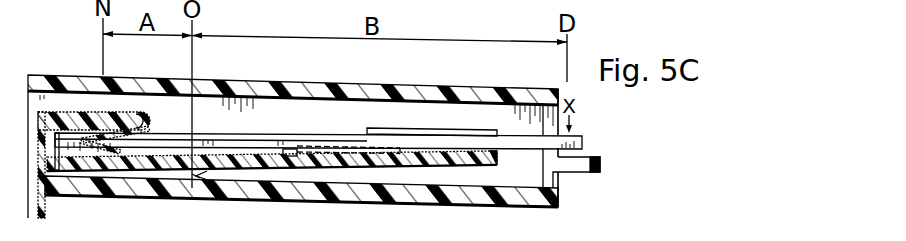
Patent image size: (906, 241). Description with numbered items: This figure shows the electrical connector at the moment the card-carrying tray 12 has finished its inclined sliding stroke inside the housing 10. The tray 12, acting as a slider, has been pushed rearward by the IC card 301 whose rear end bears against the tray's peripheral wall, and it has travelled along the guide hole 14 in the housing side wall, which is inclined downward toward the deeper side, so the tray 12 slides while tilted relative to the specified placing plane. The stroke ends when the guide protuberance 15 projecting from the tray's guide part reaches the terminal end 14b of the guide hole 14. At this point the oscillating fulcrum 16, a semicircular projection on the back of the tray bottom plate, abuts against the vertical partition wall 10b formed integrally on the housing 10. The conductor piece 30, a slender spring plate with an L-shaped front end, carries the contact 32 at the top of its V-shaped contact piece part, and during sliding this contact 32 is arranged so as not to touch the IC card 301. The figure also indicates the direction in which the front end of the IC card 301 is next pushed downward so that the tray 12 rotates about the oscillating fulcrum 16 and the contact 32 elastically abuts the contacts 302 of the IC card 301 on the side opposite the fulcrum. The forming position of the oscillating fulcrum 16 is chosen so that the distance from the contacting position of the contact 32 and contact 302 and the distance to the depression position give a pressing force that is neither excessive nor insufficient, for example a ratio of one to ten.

The housing 10 is at (429, 86).
The vertical partition wall 10b is at (432, 197).
The tray 12 is at (395, 167).
The guide hole 14 is at (345, 147).
The terminal end of guide hole 14b is at (288, 150).
The guide protuberance 15 is at (289, 146).
The oscillating fulcrum 16 is at (204, 183).
The conductor piece 30 is at (100, 111).
The IC card 301 is at (178, 138).
The contact of IC card 302 is at (121, 153).
The contact 32 is at (93, 145).